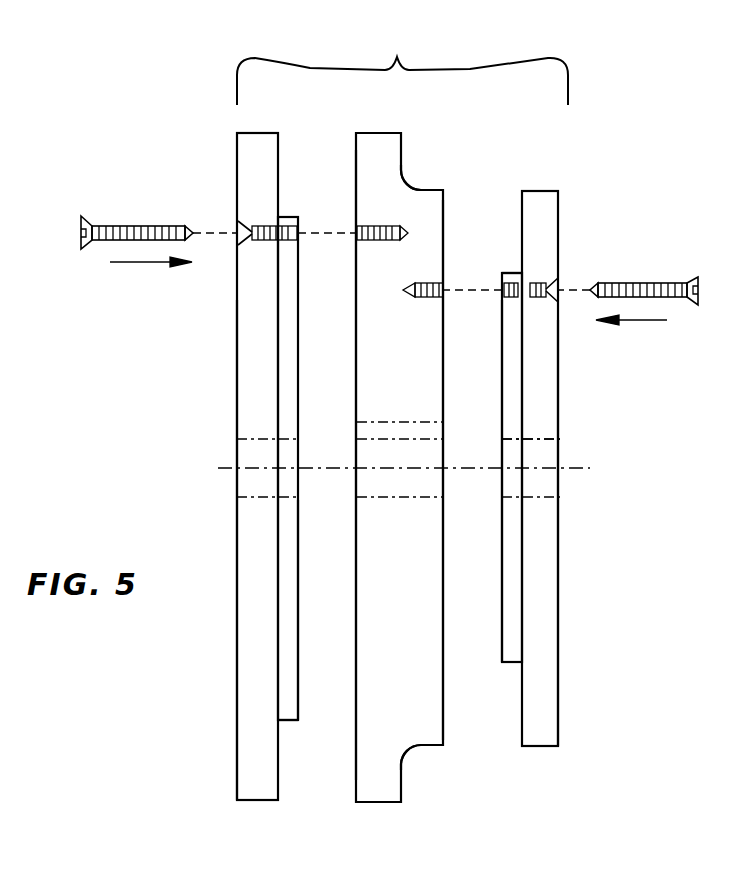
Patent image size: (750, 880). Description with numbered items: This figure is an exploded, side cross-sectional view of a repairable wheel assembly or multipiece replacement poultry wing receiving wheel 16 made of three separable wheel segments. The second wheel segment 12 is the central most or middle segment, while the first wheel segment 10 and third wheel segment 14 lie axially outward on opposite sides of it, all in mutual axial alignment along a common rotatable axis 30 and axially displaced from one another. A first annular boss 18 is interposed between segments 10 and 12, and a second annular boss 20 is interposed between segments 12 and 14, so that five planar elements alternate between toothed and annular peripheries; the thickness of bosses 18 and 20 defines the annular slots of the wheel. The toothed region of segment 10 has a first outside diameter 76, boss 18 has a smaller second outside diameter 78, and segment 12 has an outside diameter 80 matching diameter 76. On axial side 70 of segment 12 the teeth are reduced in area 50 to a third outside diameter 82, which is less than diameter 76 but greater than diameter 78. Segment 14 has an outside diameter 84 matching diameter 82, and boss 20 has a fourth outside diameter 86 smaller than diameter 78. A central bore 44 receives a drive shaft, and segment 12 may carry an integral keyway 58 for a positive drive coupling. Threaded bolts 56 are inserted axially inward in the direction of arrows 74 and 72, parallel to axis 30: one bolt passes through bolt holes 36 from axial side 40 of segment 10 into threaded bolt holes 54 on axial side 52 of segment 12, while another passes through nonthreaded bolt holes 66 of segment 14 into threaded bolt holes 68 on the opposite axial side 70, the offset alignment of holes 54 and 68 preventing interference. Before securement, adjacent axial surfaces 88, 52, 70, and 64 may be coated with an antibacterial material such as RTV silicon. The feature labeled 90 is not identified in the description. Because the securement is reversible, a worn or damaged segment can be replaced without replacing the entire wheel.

The first wheel segment 10 is at (246, 816).
The second wheel segment 12 is at (414, 795).
The third wheel segment 14 is at (551, 773).
The repairable wheel assembly 16 is at (402, 55).
The first annular boss 18 is at (290, 722).
The second annular boss 20 is at (510, 665).
The common rotatable axis 30 is at (588, 469).
The bolt holes 36 is at (253, 236).
The axial side 40 is at (236, 622).
The central bore 44 is at (547, 447).
The reduced tooth area 50 is at (424, 748).
The axial side 52 is at (353, 370).
The threaded bolt holes 54 is at (382, 230).
The threaded bolt 56 is at (82, 216).
The keyway 58 is at (375, 421).
The axial surface 64 is at (500, 572).
The nonthreaded bolt holes 66 is at (543, 282).
The threaded bolt holes 68 is at (443, 290).
The axial side 70 is at (447, 376).
The arrow 72 is at (633, 321).
The arrow 74 is at (140, 264).
The first outside diameter 76 is at (262, 133).
The second outside diameter 78 is at (297, 220).
The outside diameter 80 is at (378, 133).
The third outside diameter 82 is at (423, 186).
The outside diameter 84 is at (553, 191).
The fourth outside diameter 86 is at (505, 273).
The axial surface 88 is at (300, 630).
The outer face of third plate 90 is at (560, 612).